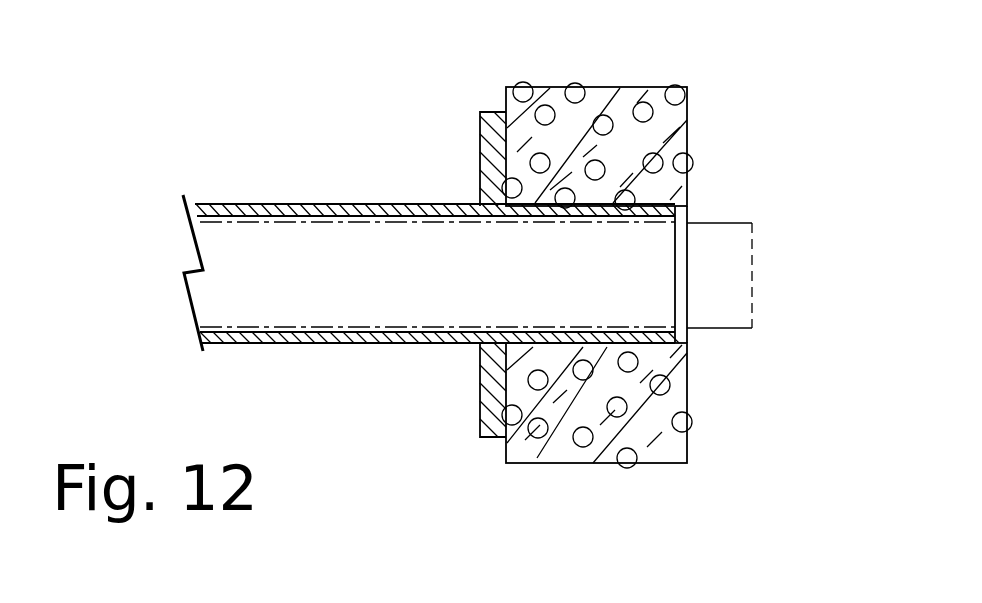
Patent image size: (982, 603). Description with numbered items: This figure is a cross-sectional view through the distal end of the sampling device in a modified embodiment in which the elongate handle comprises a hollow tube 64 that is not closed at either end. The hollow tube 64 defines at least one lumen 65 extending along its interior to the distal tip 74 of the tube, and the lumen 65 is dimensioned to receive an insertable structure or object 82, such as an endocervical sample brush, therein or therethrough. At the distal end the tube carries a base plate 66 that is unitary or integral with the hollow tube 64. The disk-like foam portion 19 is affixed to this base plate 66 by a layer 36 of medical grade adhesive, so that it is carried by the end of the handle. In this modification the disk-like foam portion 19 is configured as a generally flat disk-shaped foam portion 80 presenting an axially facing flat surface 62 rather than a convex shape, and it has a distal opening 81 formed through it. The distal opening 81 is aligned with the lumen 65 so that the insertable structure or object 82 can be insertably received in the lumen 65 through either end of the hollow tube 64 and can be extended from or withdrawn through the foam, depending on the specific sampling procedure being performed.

The disk-like foam portion 19 is at (695, 143).
The layer of medical grade adhesive 36 is at (507, 163).
The axially facing flat surface 62 is at (688, 400).
The hollow tube 64 is at (367, 203).
The lumen 65 is at (277, 327).
The base plate 66 is at (480, 383).
The distal tip 74 is at (675, 297).
The flat disk-shaped foam portion 80 is at (640, 85).
The distal opening 81 is at (688, 222).
The insertable structure or object 82 is at (740, 330).